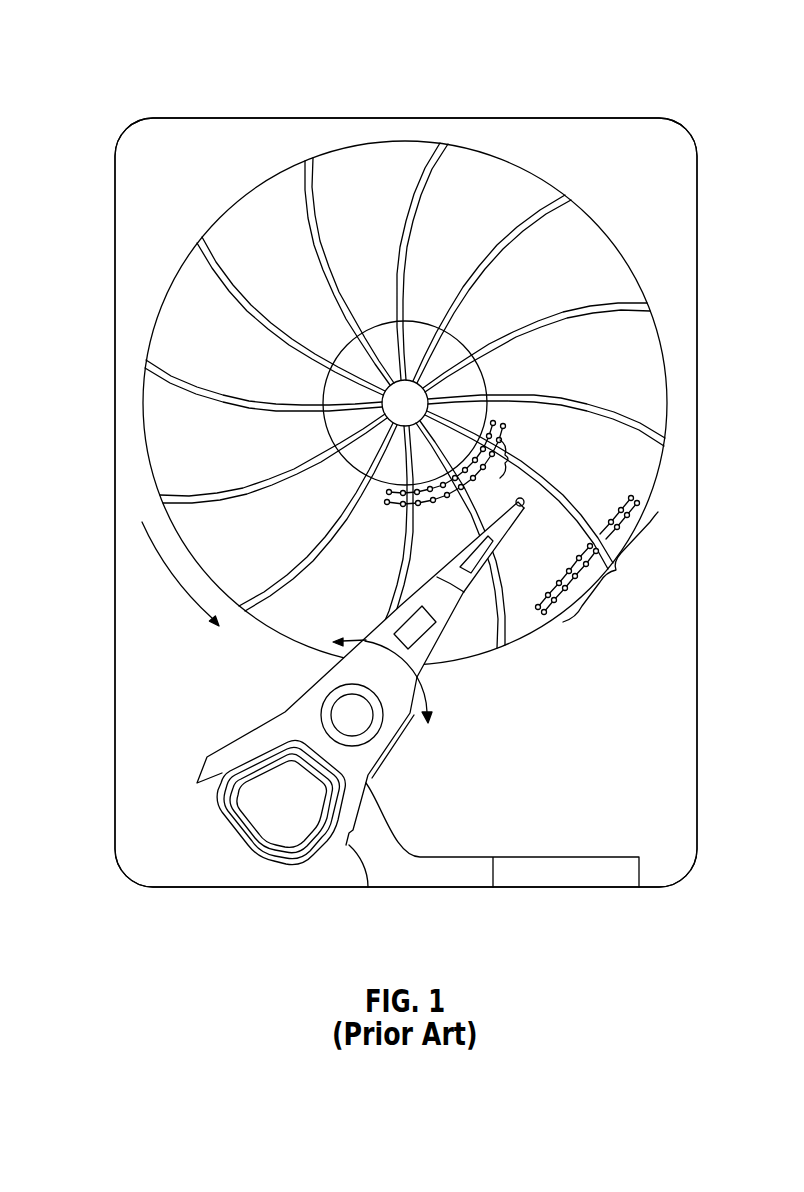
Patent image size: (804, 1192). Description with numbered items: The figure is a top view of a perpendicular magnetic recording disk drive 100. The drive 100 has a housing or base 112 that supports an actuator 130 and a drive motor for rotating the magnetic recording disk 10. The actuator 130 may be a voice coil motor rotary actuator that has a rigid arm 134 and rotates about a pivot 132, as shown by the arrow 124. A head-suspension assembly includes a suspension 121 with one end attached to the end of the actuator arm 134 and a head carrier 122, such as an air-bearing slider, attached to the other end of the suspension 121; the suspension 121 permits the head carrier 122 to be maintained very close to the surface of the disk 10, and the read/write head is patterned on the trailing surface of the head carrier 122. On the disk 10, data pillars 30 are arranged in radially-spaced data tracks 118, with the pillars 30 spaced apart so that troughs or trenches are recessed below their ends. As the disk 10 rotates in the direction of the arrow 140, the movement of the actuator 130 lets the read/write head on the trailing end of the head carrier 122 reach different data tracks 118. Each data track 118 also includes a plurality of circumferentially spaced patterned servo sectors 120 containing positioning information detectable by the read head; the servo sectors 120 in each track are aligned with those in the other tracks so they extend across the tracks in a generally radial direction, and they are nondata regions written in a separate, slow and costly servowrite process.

The perpendicular magnetic recording disk drive 100 is at (111, 37).
The housing or base 112 is at (625, 118).
The magnetic recording disk 10 is at (270, 178).
The servo sectors 120 is at (318, 190).
The data tracks 118 is at (385, 512).
The data pillars 30 is at (508, 459).
The arrow 140 is at (160, 556).
The actuator 130 is at (203, 770).
The pivot 132 is at (345, 712).
The suspension 121 is at (452, 570).
The head carrier 122 is at (522, 508).
The rigid arm 134 is at (380, 630).
The arrow 124 is at (430, 697).